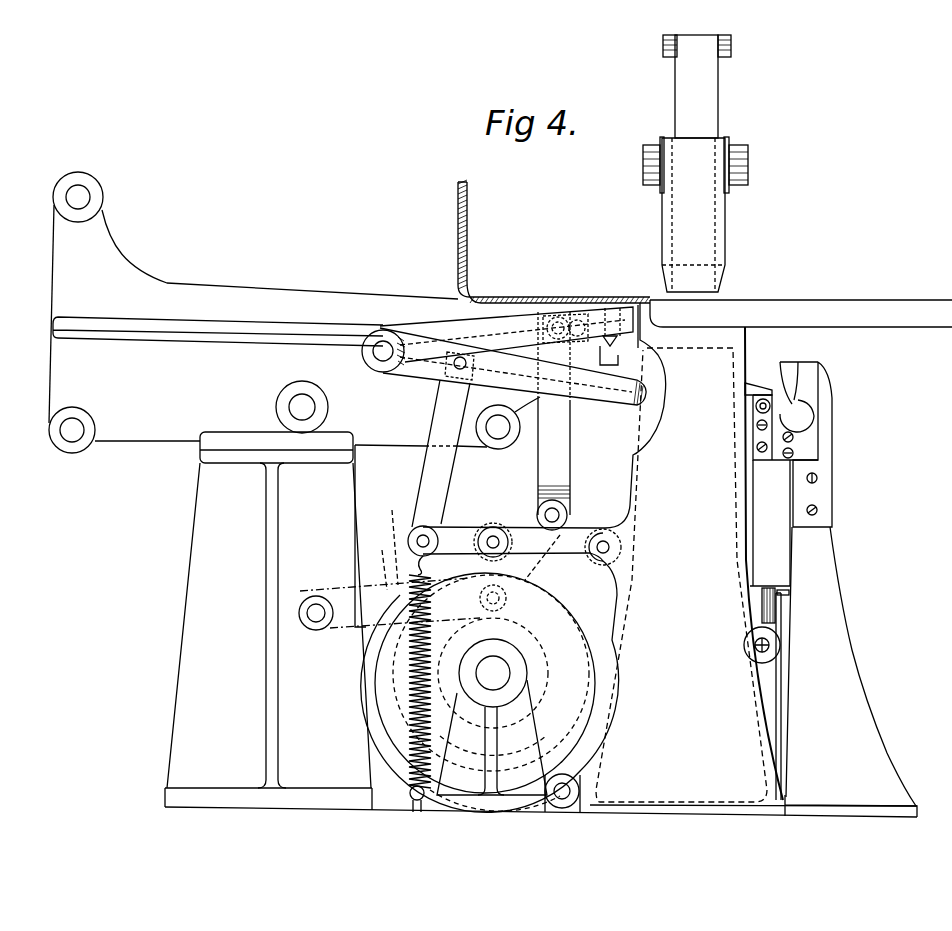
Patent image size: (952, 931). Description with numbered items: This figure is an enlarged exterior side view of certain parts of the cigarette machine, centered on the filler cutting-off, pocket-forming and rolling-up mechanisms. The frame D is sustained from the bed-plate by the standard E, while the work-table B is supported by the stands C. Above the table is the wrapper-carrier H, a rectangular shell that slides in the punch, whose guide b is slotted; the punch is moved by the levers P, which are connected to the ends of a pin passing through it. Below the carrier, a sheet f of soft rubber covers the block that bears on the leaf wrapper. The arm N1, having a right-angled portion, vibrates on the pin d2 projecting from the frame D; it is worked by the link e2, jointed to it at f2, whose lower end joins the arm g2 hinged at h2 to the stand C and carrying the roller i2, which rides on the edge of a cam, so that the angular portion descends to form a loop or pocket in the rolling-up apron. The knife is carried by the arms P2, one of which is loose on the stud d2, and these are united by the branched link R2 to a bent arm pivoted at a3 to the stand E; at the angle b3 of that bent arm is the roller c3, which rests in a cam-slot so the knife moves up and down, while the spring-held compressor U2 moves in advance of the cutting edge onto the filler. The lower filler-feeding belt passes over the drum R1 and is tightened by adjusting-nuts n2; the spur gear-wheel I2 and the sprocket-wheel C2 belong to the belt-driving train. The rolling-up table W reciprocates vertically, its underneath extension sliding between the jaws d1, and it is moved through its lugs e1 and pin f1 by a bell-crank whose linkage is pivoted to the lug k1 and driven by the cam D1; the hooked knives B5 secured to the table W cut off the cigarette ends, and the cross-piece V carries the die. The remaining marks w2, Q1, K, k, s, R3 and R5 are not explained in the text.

The frame D is at (268, 312).
The standard E is at (268, 621).
The stand C is at (541, 560).
The arms P2 is at (465, 313).
The spring-held compressor U2 is at (597, 295).
The pin w2 is at (627, 300).
The bracket Q1 is at (623, 337).
The arm N1 is at (513, 366).
The pin d2 is at (445, 377).
The joint f2 is at (436, 385).
The link e2 is at (489, 423).
The branched link R2 is at (563, 460).
The roller i2 is at (496, 527).
The angle of the bent arm b3 is at (441, 453).
The hinge h2 is at (570, 612).
The arm g2 is at (603, 547).
The adjusting-nuts n2 is at (414, 528).
The cam D1 is at (380, 550).
The pivot a3 is at (316, 613).
The cam wheel K is at (518, 661).
The hub k is at (522, 685).
The roller c3 is at (508, 598).
The sheet f is at (445, 645).
The spur gear-wheel I2 is at (538, 714).
The lug k1 is at (566, 782).
The work-table B is at (800, 314).
The wrapper-carrier H is at (696, 86).
The nut s is at (668, 54).
The guide b is at (727, 249).
The levers P is at (646, 143).
The sprocket-wheel C2 is at (652, 384).
The rod R3 is at (670, 398).
The rolling-up table W is at (748, 381).
The cross-piece V is at (763, 333).
The jaws d1 is at (784, 490).
The bar R5 is at (832, 398).
The hooked knives B5 is at (832, 430).
The lugs e1 is at (757, 590).
The pin f1 is at (777, 648).
The drum R1 is at (851, 671).